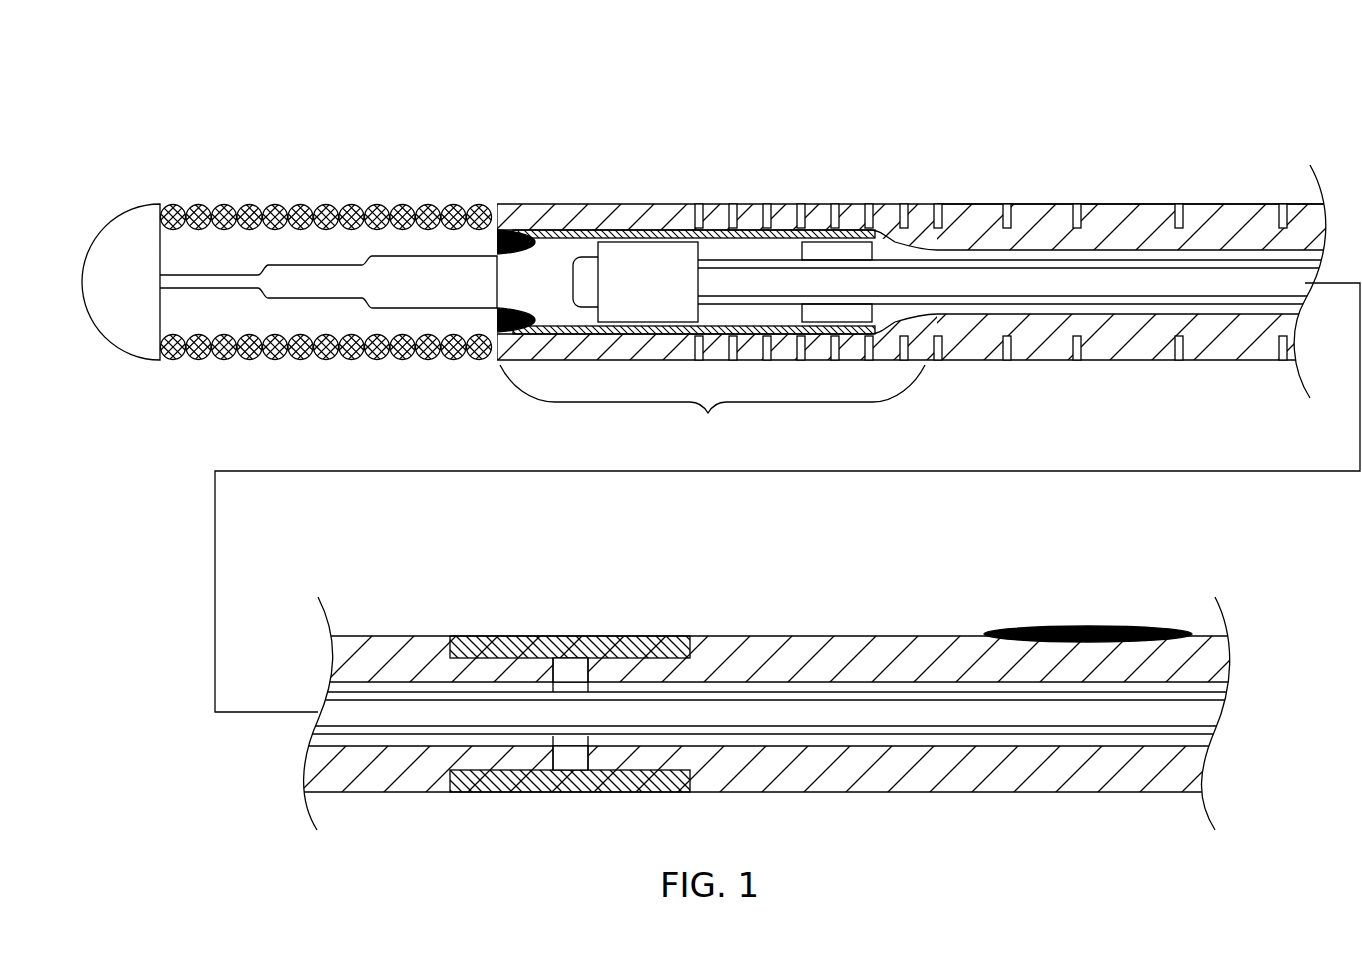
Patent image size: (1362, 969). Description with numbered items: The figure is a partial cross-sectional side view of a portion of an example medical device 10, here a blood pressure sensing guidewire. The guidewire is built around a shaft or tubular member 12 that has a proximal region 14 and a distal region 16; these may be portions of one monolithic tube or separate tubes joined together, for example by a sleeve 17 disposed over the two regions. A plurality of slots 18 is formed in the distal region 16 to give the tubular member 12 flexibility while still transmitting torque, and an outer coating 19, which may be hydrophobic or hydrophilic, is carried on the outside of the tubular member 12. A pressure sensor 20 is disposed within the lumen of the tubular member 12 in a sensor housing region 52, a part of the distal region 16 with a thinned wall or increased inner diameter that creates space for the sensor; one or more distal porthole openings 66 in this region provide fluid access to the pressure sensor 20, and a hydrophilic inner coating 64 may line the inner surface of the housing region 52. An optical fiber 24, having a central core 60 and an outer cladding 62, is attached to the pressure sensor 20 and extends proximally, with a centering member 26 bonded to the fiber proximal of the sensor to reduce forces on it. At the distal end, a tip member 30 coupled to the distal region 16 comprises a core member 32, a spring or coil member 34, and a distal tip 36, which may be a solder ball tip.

The medical device 10 is at (907, 90).
The tubular member 12 is at (1228, 200).
The proximal region 14 is at (900, 636).
The distal region 16 is at (1045, 204).
The sleeve 17 is at (568, 636).
The slots 18 is at (732, 213).
The outer coating 19 is at (1087, 627).
The pressure sensor 20 is at (657, 303).
The optical fiber 24 is at (1130, 308).
The centering member 26 is at (865, 250).
The tip member 30 is at (243, 196).
The core member 32 is at (305, 285).
The coil member 34 is at (330, 215).
The distal tip 36 is at (137, 220).
The sensor housing region 52 is at (712, 404).
The central core 60 is at (1242, 283).
The outer cladding 62 is at (1125, 265).
The inner coating 64 is at (820, 235).
The distal porthole opening 66 is at (584, 293).